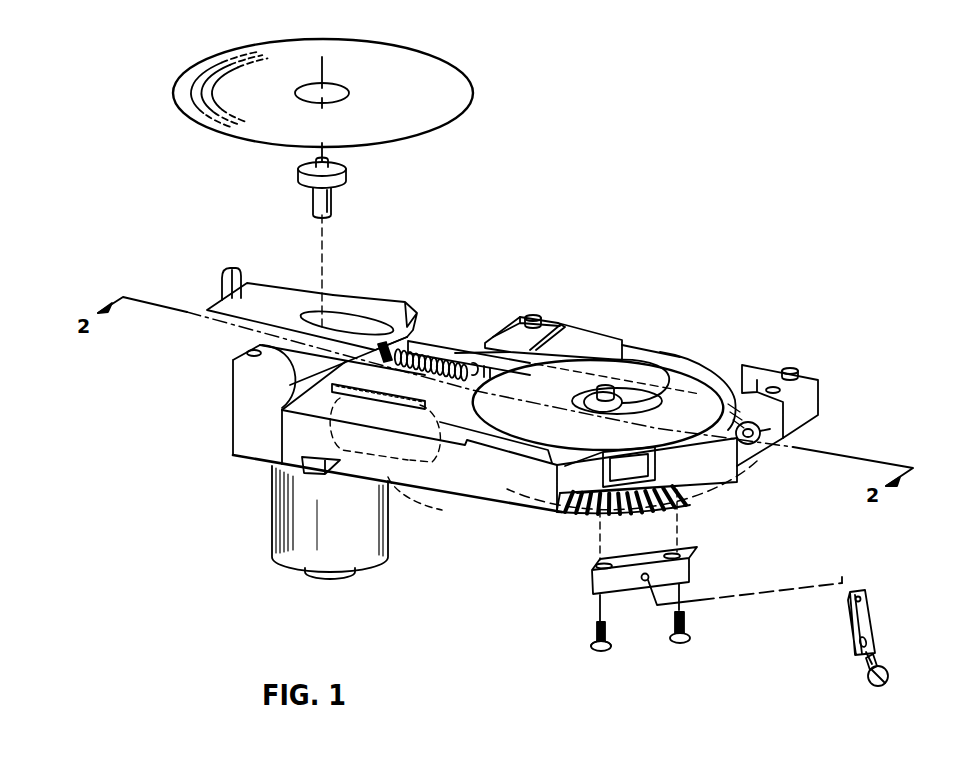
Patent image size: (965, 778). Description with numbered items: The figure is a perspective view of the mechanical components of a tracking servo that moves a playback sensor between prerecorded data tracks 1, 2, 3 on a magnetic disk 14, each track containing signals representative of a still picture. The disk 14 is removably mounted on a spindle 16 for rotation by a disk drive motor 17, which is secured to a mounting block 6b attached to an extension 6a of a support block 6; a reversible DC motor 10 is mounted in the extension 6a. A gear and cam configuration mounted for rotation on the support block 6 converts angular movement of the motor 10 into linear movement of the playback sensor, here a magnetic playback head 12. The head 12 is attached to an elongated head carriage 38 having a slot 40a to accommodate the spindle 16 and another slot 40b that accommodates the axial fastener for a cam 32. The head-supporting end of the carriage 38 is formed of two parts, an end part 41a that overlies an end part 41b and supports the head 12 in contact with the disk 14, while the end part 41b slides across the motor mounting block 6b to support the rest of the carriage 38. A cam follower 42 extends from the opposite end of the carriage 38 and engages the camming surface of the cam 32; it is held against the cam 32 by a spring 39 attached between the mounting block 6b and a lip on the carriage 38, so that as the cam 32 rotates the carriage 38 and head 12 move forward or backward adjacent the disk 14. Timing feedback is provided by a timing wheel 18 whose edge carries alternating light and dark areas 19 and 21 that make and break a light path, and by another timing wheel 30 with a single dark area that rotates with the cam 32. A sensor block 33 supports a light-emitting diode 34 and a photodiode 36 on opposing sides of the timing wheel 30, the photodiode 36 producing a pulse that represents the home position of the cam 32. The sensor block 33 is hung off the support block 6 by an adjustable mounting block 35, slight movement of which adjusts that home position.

The data track 1 is at (216, 128).
The data track 2 is at (240, 127).
The data track 3 is at (254, 127).
The disk 14 is at (462, 90).
The spindle 16 is at (350, 178).
The magnetic playback head 12 is at (277, 282).
The end part 41a is at (268, 305).
The slot 40a is at (417, 285).
The spring 39 is at (486, 360).
The end part 41b is at (267, 405).
The mounting block 6b is at (237, 428).
The support block 6 is at (613, 338).
The extension 6a is at (305, 468).
The reversible DC motor 10 is at (442, 510).
The disk drive motor 17 is at (272, 527).
The head carriage 38 is at (665, 362).
The slot 40b is at (698, 382).
The cam 32 is at (722, 370).
The timing wheel 30 is at (742, 368).
The cam follower 42 is at (740, 442).
The light areas 19 is at (640, 510).
The timing wheel 18 is at (700, 510).
The dark areas 21 is at (565, 512).
The adjustable mounting block 35 is at (592, 582).
The photodiode 36 is at (862, 600).
The light-emitting diode 34 is at (850, 620).
The sensor block 33 is at (870, 640).